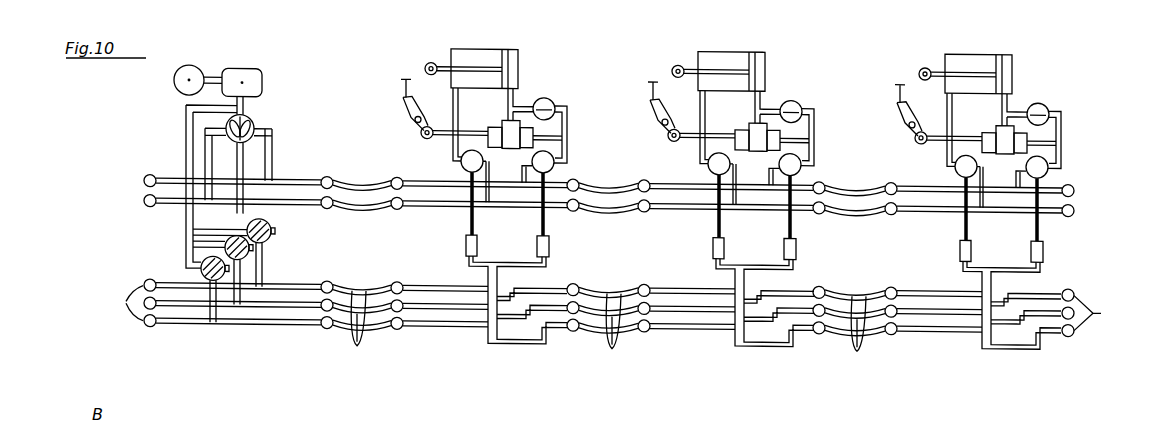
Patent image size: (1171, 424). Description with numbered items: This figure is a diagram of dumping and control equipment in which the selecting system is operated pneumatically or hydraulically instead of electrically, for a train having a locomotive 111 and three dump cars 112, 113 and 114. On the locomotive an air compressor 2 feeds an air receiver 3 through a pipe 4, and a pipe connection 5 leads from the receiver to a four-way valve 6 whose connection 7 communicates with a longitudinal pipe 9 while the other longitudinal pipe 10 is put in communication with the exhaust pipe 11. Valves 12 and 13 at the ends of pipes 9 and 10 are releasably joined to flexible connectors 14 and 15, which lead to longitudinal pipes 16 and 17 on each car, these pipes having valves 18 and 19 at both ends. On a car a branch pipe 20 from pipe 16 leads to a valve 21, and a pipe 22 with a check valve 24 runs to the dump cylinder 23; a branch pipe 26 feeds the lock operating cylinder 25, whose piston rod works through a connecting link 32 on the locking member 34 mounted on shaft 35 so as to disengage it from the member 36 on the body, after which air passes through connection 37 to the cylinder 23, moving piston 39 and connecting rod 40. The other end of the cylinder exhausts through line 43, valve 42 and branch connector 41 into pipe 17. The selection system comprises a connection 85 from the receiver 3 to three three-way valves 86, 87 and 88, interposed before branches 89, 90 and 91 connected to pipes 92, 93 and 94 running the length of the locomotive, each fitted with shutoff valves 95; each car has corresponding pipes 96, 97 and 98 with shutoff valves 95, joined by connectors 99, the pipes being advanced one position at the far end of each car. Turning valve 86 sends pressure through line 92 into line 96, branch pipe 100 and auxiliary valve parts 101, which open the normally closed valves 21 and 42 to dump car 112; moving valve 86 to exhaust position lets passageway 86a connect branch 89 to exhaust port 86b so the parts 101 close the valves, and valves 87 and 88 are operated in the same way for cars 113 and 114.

The air compressor 2 is at (181, 66).
The air receiver 3 is at (240, 68).
The pipe 4 is at (211, 74).
The pipe connection 5 is at (258, 103).
The four-way valve 6 is at (254, 125).
The connection 7 is at (274, 149).
The longitudinal pipe 9 is at (175, 178).
The longitudinal pipe 10 is at (169, 203).
The exhaust pipe 11 is at (234, 212).
The valve 12 is at (144, 178).
The valve 13 is at (144, 202).
The flexible connector 14 is at (348, 180).
The flexible connector 15 is at (362, 205).
The longitudinal pipe 16 is at (415, 173).
The longitudinal pipe 17 is at (426, 205).
The valve 18 is at (398, 174).
The valve 19 is at (400, 206).
The branch pipe 20 is at (521, 173).
The solenoid operated valve 21 is at (556, 166).
The pipe 22 is at (568, 107).
The dump cylinder 23 is at (520, 78).
The check valve 24 is at (553, 101).
The lock operating cylinder 25 is at (496, 121).
The branch pipe 26 is at (566, 131).
The connecting link 32 is at (442, 140).
The locking member 34 is at (417, 116).
The shaft 35 is at (421, 139).
The member 36 is at (402, 93).
The pipe connection 37 is at (521, 105).
The piston 39 is at (511, 52).
The connecting rod 40 is at (437, 64).
The branch connector 41 is at (492, 200).
The solenoid operated valve 42 is at (463, 166).
The line 43 is at (452, 121).
The connection 85 is at (185, 114).
The three-way valve 86 is at (272, 228).
The passageway 86a is at (255, 224).
The exhaust port 86b is at (326, 245).
The three-way valve 87 is at (250, 250).
The three-way valve 88 is at (201, 262).
The branch 89 is at (287, 278).
The branch 90 is at (253, 297).
The branch 91 is at (205, 322).
The pipe 92 is at (145, 281).
The pipe 93 is at (170, 313).
The pipe 94 is at (229, 326).
The shutoff valve 95 is at (893, 274).
The longitudinal pipe 96 is at (419, 282).
The longitudinal pipe 97 is at (534, 266).
The longitudinal pipe 98 is at (453, 325).
The connector 99 is at (604, 337).
The branch pipe 100 is at (549, 268).
The auxiliary valve parts 101 is at (536, 249).
The locomotive 111 is at (330, 40).
The car 112 is at (577, 43).
The car 113 is at (735, 27).
The car 114 is at (982, 30).